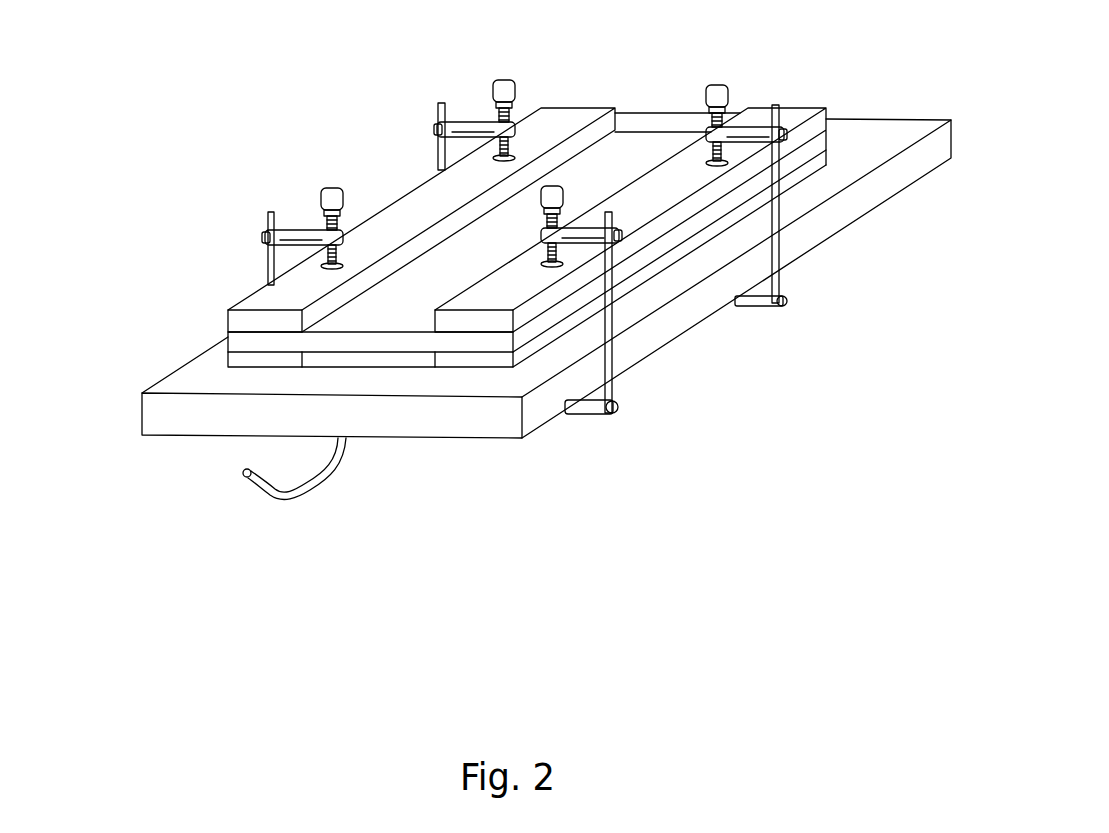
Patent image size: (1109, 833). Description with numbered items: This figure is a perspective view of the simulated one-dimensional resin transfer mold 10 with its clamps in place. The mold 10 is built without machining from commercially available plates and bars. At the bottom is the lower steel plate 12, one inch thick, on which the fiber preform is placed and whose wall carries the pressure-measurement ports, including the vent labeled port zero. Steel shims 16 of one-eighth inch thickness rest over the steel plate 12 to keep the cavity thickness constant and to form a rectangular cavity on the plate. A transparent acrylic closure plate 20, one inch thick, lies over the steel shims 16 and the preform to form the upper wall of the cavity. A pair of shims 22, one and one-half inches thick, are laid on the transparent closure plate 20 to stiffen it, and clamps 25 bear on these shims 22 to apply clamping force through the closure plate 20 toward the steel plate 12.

The simulated one-dimensional resin transfer mold 10 is at (657, 82).
The lower steel plate 12 is at (687, 308).
The steel shims 16 is at (228, 357).
The transparent acrylic closure plate 20 is at (340, 343).
The shims 22 is at (260, 298).
The clamps 25 is at (417, 125).